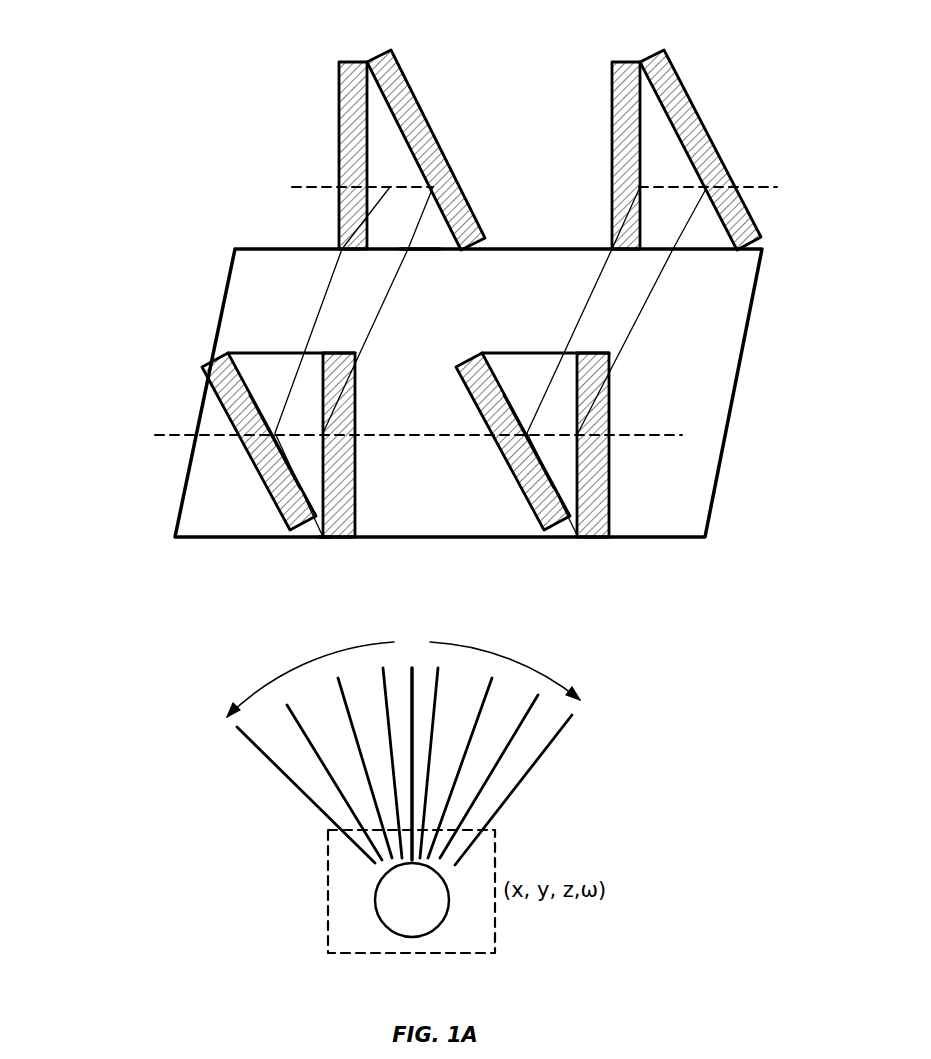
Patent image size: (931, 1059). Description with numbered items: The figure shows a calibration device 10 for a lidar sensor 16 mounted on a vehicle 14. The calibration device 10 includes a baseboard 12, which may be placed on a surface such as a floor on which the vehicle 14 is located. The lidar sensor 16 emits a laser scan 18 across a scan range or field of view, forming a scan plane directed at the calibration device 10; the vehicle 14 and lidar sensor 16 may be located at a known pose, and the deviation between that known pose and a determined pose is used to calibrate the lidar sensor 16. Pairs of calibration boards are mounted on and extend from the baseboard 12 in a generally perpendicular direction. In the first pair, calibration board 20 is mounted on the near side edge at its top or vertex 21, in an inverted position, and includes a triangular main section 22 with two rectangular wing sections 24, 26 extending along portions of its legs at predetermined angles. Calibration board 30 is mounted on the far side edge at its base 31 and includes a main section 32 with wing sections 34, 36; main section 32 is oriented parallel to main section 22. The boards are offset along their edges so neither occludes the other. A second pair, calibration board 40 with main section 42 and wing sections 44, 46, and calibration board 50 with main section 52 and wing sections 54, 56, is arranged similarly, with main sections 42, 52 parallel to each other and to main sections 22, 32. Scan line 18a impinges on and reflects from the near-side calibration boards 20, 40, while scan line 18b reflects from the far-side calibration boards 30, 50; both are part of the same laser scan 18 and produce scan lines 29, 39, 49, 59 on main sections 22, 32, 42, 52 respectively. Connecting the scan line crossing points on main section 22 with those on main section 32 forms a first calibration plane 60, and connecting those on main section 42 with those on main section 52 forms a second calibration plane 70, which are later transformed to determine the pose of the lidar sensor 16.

The calibration device 10 is at (437, 294).
The baseboard 12 is at (733, 330).
The vehicle 14 is at (328, 850).
The lidar sensor 16 is at (375, 897).
The laser scan 18 is at (540, 782).
The scan line 18a is at (170, 438).
The scan line 18b is at (302, 190).
The calibration board 20 is at (280, 445).
The vertex 21 is at (323, 540).
The main section 22 is at (275, 362).
The wing section 24 is at (210, 400).
The wing section 26 is at (347, 510).
The scan line 29 is at (268, 482).
The calibration board 30 is at (347, 125).
The base 31 is at (423, 250).
The main section 32 is at (388, 145).
The wing section 34 is at (438, 127).
The wing section 36 is at (347, 102).
The scan line 39 is at (390, 190).
The calibration board 40 is at (534, 441).
The main section 42 is at (528, 362).
The wing section 44 is at (465, 395).
The wing section 46 is at (603, 510).
The scan line 49 is at (522, 478).
The calibration board 50 is at (620, 125).
The main section 52 is at (662, 145).
The wing section 54 is at (708, 127).
The wing section 56 is at (620, 102).
The scan line 59 is at (637, 190).
The first calibration plane 60 is at (354, 362).
The second calibration plane 70 is at (617, 362).